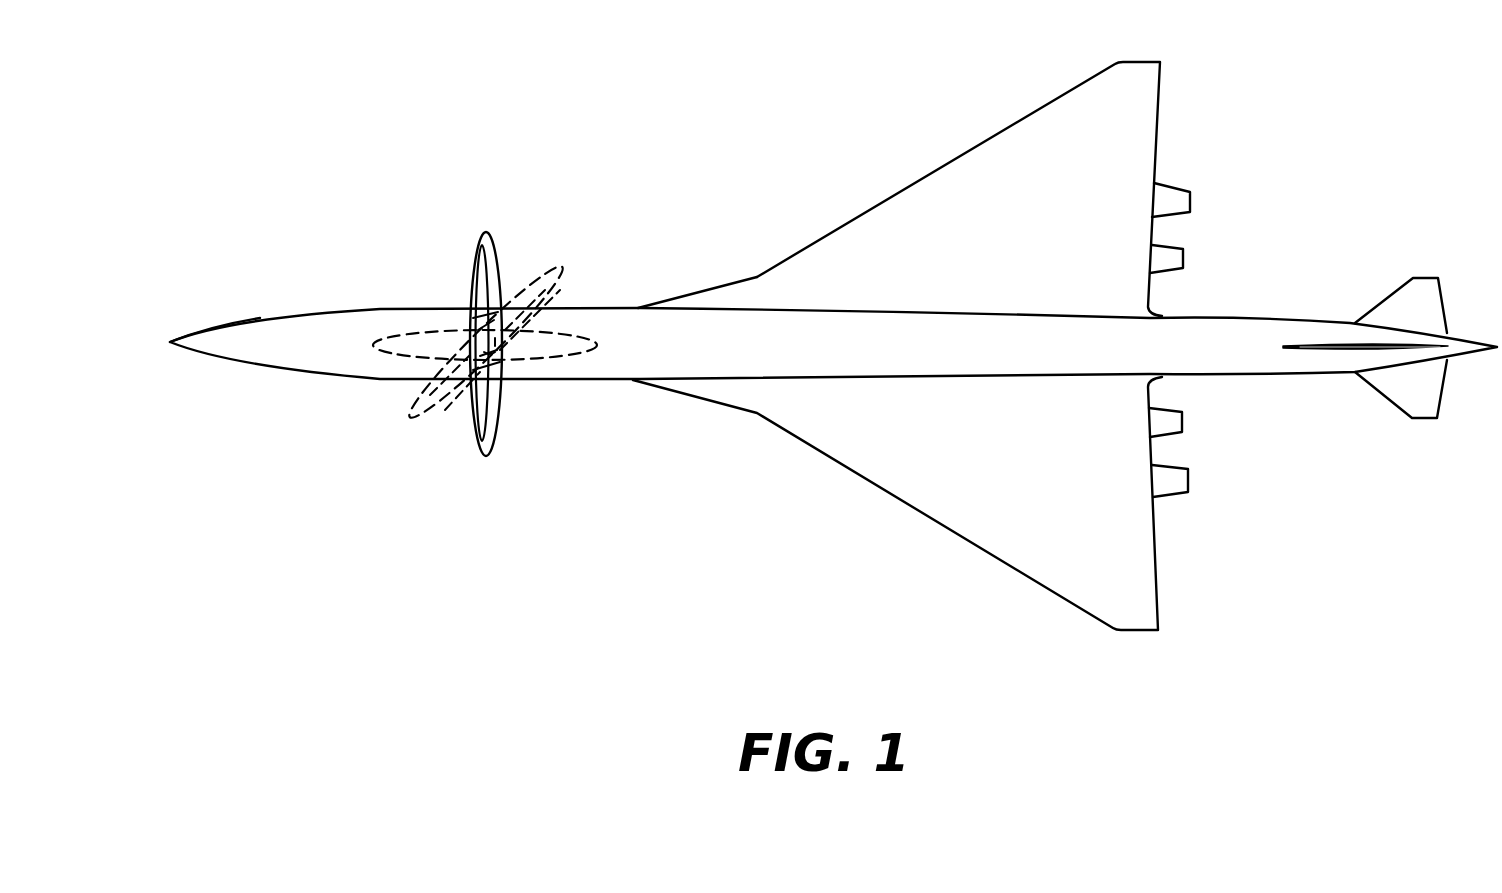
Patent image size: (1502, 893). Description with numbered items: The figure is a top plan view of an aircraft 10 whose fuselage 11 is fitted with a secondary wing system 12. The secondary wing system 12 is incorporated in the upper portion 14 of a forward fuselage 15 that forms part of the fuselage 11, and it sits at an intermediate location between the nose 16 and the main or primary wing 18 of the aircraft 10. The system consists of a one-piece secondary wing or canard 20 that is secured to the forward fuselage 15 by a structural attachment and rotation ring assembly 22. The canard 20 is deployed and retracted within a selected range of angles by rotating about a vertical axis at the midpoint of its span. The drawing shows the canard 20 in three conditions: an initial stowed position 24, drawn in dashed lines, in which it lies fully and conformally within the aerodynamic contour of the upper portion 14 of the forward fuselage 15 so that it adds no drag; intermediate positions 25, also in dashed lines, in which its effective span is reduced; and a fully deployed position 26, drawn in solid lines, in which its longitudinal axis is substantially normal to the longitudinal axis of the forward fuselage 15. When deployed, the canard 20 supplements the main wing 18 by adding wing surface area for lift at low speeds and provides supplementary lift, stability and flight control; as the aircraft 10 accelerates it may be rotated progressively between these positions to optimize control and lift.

The aircraft 10 is at (722, 174).
The fuselage 11 is at (797, 392).
The secondary wing system 12 is at (440, 247).
The upper portion of the forward fuselage 14 is at (623, 333).
The forward fuselage 15 is at (310, 352).
The nose 16 is at (173, 343).
The main wing 18 is at (870, 229).
The canard 20 is at (490, 242).
The structural attachment and rotation ring assembly 22 is at (455, 308).
The stowed position 24 is at (597, 365).
The intermediate positions 25 is at (417, 413).
The fully deployed position 26 is at (498, 420).